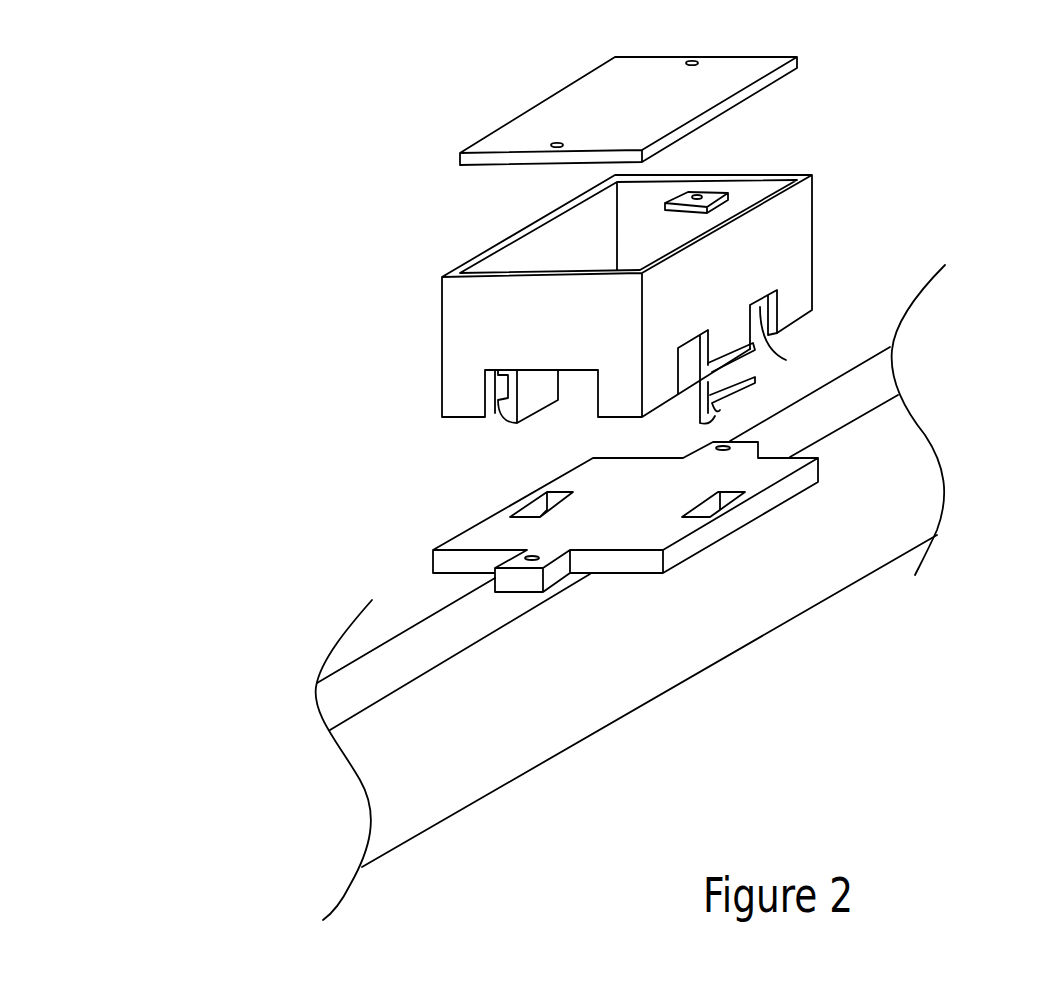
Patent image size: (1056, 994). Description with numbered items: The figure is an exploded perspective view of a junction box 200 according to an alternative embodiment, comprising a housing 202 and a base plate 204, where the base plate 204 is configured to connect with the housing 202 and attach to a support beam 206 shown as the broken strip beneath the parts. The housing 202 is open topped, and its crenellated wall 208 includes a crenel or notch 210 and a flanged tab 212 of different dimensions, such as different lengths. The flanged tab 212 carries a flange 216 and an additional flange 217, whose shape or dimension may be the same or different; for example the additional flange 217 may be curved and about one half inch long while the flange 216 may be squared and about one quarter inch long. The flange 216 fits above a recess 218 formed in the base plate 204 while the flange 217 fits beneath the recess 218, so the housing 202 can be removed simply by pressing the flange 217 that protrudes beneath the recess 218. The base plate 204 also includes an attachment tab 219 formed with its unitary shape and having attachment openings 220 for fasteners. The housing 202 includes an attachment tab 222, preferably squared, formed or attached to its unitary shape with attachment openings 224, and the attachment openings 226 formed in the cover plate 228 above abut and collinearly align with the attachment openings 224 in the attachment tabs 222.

The junction box 200 is at (297, 152).
The housing 202 is at (866, 212).
The base plate 204 is at (414, 521).
The support beam 206 is at (866, 386).
The crenellated wall 208 is at (813, 278).
The crenel/notch 210 is at (780, 359).
The flanged tab 212 is at (532, 407).
The flange 216 is at (708, 373).
The additional flange 217 is at (748, 384).
The recess 218 is at (705, 508).
The attachment tab 219 is at (757, 441).
The attachment openings 220 is at (531, 562).
The attachment tab 222 is at (718, 197).
The attachment openings 224 is at (698, 196).
The attachment openings 226 is at (693, 62).
The cover plate 228 is at (760, 73).